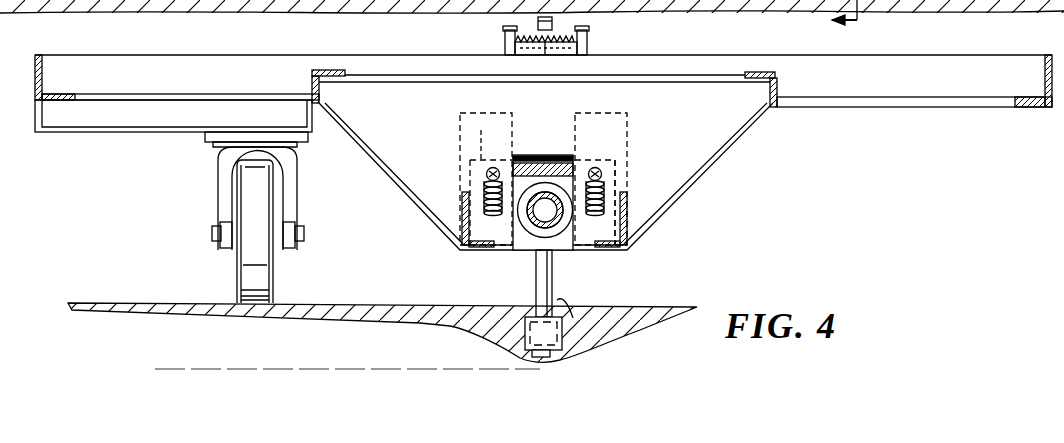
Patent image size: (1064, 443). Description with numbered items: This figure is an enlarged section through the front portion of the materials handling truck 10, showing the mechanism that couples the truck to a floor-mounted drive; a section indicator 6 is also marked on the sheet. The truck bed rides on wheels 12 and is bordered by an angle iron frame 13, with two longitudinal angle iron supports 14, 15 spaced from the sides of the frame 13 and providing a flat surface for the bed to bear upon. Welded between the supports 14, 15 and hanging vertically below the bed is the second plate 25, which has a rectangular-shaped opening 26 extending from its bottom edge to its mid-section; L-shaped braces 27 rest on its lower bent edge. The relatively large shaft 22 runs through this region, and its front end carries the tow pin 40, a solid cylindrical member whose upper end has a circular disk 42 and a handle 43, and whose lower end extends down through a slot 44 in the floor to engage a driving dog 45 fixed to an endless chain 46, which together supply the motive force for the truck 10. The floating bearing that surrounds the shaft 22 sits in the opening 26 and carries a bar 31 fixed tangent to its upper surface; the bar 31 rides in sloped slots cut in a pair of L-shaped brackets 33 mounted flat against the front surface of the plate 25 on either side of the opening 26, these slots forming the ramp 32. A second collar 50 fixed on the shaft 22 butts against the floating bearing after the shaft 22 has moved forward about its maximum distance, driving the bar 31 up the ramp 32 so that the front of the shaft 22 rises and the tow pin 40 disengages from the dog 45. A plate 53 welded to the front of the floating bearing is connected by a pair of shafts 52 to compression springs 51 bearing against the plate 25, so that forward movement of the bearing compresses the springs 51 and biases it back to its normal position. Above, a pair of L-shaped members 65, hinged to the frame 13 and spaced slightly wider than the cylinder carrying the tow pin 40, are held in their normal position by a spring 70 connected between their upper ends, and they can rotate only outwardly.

The section line 6- 6 is at (856, 27).
The materials handling truck 10 is at (35, 52).
The wheels 12 is at (245, 277).
The frame 13 is at (35, 73).
The support 14 is at (316, 70).
The support 15 is at (777, 90).
The shaft 22 is at (530, 218).
The second plate 25 is at (383, 143).
The rectangular-shaped opening 26 is at (533, 155).
The braces 27 is at (464, 250).
The bar 31 is at (551, 170).
The ramp 32 is at (628, 162).
The brackets 33 is at (460, 120).
The tow pin 40 is at (552, 287).
The circular disk 42 is at (548, 45).
The handle 43 is at (538, 20).
The slot 44 is at (581, 316).
The driving dog 45 is at (525, 331).
The endless chain 46 is at (530, 353).
The second collar 50 is at (537, 233).
The compression springs 51 is at (486, 195).
The shafts 52 is at (487, 174).
The plate 53 is at (485, 140).
The members 65 is at (505, 47).
The spring 70 is at (536, 40).